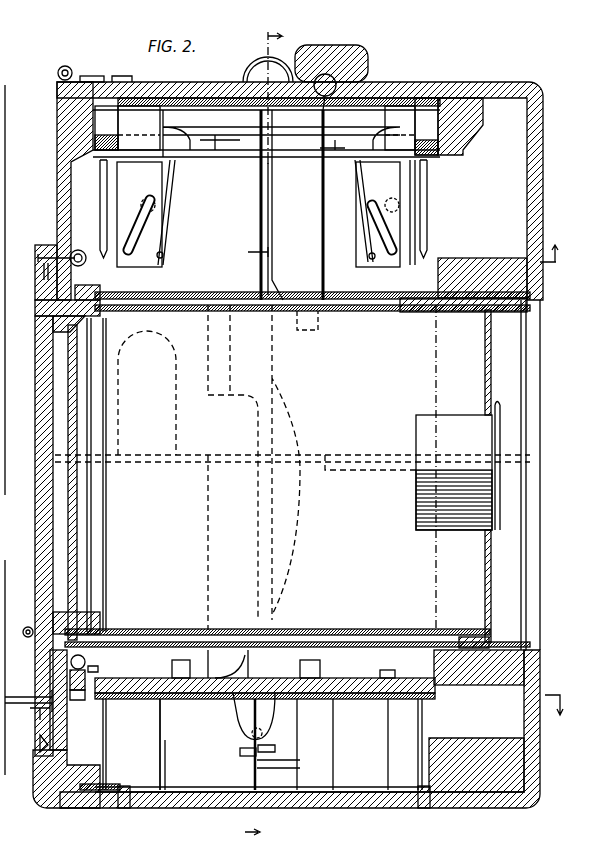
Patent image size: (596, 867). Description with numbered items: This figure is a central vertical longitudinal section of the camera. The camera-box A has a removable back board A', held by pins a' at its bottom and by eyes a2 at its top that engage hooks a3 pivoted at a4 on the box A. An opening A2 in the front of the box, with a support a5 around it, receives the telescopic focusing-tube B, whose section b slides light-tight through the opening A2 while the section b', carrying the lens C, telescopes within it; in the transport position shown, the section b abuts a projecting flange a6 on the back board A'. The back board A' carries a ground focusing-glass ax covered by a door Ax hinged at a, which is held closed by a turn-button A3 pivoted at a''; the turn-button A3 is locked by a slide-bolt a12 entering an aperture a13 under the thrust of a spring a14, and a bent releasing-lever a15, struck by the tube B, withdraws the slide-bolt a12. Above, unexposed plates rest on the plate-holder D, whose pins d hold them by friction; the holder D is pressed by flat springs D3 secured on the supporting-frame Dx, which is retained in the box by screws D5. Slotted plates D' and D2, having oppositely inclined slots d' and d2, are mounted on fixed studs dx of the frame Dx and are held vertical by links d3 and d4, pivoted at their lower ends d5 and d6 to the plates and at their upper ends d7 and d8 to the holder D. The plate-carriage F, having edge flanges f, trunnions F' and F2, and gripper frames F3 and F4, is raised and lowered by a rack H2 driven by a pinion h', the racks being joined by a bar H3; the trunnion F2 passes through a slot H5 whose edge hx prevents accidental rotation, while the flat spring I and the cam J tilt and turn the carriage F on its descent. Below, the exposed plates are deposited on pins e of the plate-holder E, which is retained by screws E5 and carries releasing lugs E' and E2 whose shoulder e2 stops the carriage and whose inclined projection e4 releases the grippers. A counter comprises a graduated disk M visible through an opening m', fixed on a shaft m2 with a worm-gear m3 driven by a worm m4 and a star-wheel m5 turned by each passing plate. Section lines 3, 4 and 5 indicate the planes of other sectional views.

The camera-box A is at (311, 433).
The removable back board A' is at (53, 445).
The opening A2 is at (540, 335).
The turn-button A3 is at (33, 330).
The hinged door Ax is at (36, 448).
The door hinge a is at (23, 622).
The pins a' is at (100, 774).
The turn-button pivot a'' is at (39, 276).
The eyes a2 is at (65, 66).
The hooks a3 is at (92, 76).
The hook pivot a4 is at (122, 76).
The focusing-tube support a5 is at (500, 270).
The projecting flange a6 is at (95, 318).
The ground focusing-glass ax is at (78, 532).
The slide-bolt a12 is at (42, 252).
The aperture a13 is at (42, 258).
The spring a14 is at (100, 283).
The bent releasing-lever a15 is at (90, 246).
The focusing-tube B is at (492, 585).
The tube section b is at (297, 455).
The tube section b' is at (297, 476).
The lens C is at (292, 467).
The flat spring I is at (177, 345).
The cam J is at (220, 495).
The plate-holder D is at (277, 205).
The slotted plate D' is at (378, 214).
The slotted plate D2 is at (139, 214).
The flat springs D3 is at (289, 126).
The screws D5 is at (182, 96).
The supporting-frame Dx is at (266, 129).
The pins d is at (267, 209).
The inclined slot d' is at (422, 220).
The inclined slot d2 is at (135, 262).
The link d3 is at (362, 205).
The link d4 is at (168, 200).
The lower link pivot d5 is at (369, 258).
The lower link pivot d6 is at (163, 257).
The upper link pivot d7 is at (328, 142).
The upper link pivot d8 is at (220, 140).
The fixed studs dx is at (140, 205).
The rack H2 is at (247, 746).
The bar H3 is at (250, 70).
The trunnion-slot H5 is at (248, 249).
The pinion h' is at (331, 83).
The slot edge hx is at (273, 210).
The plate-holder E is at (262, 777).
The plate-releasing lug E' is at (184, 744).
The plate-releasing lug E2 is at (278, 771).
The screws E5 is at (445, 738).
The pins e is at (107, 740).
The shoulder e2 is at (162, 700).
The inclined projection e4 is at (334, 660).
The plate-carriage F is at (265, 700).
The trunnion F' is at (275, 744).
The trunnion F2 is at (254, 716).
The gripper frame F3 is at (300, 722).
The gripper frame F4 is at (212, 668).
The edge flanges f is at (383, 725).
The graduated disk M is at (28, 695).
The opening m' is at (29, 745).
The shaft m2 is at (29, 709).
The worm-gear m3 is at (78, 702).
The worm m4 is at (86, 662).
The star-wheel m5 is at (100, 668).
The section line 3 is at (402, 545).
The section line 4 is at (555, 696).
The section line 5 is at (272, 89).